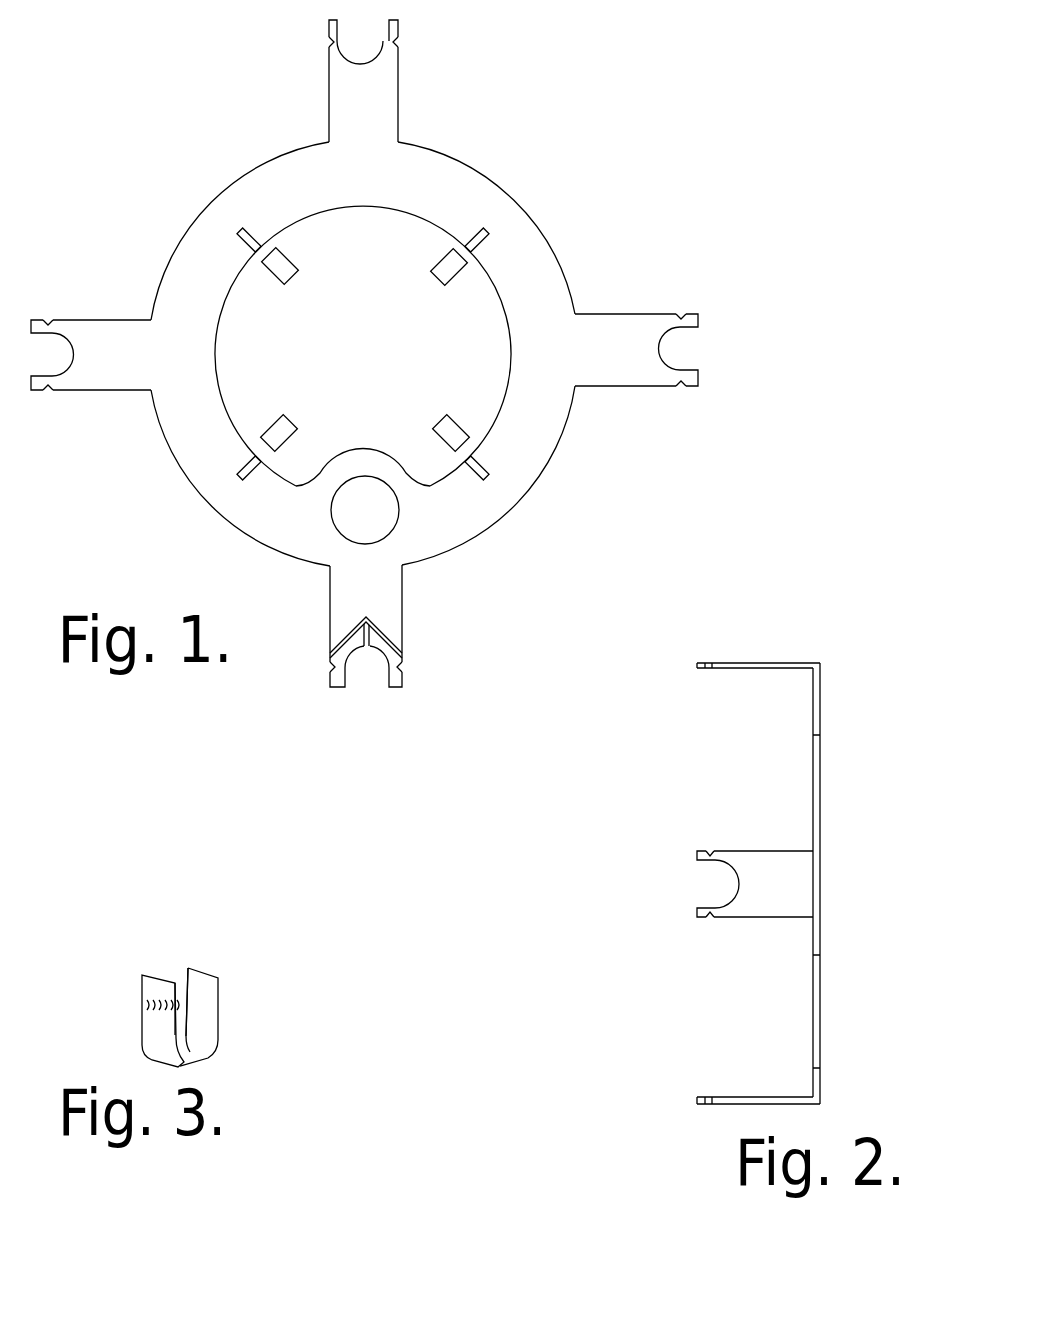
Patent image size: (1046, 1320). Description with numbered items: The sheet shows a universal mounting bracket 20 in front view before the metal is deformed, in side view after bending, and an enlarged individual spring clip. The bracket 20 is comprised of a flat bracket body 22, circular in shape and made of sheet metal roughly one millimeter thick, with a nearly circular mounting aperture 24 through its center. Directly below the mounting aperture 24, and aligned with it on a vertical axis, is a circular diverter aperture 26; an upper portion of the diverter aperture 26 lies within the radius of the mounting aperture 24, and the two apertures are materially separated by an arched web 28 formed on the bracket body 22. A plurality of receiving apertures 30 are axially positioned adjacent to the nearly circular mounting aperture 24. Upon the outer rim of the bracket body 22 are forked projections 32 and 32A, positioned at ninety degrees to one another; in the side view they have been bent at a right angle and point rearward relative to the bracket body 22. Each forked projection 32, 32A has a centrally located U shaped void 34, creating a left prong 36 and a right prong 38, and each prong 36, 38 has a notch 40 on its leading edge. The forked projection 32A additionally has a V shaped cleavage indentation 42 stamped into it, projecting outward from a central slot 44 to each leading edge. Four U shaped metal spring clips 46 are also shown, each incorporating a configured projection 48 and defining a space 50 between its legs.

In FIG. 1, the universal mounting bracket 20 is at (579, 205).
In FIG. 2, the universal mounting bracket 20 is at (838, 806).
In FIG. 1, the bracket body 22 is at (452, 168).
In FIG. 2, the bracket body 22 is at (822, 955).
In FIG. 1, the mounting aperture 24 is at (474, 356).
In FIG. 1, the diverter aperture 26 is at (382, 500).
In FIG. 1, the arched web 28 is at (366, 455).
In FIG. 1, the receiving apertures 30 is at (246, 242).
In FIG. 1, the forked projection 32 is at (340, 112).
In FIG. 2, the forked projection 32 is at (758, 661).
In FIG. 1, the forked projection 32A is at (388, 578).
In FIG. 2, the forked projection 32A is at (738, 1097).
In FIG. 1, the U shaped void 34 is at (366, 40).
In FIG. 2, the U shaped void 34 is at (716, 884).
In FIG. 1, the left prong 36 is at (327, 38).
In FIG. 2, the left prong 36 is at (700, 852).
In FIG. 1, the right prong 38 is at (400, 36).
In FIG. 2, the right prong 38 is at (700, 918).
In FIG. 1, the notch 40 is at (326, 45).
In FIG. 2, the notch 40 is at (711, 851).
In FIG. 1, the V shaped cleavage indentation 42 is at (340, 642).
In FIG. 1, the central slot 44 is at (366, 650).
In FIG. 1, the spring clip 46 is at (282, 260).
In FIG. 3, the spring clip 46 is at (212, 1040).
In FIG. 3, the configured projection 48 is at (185, 1006).
In FIG. 3, the space 50 is at (184, 978).